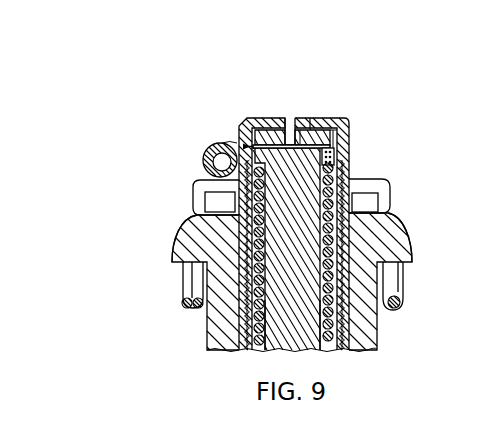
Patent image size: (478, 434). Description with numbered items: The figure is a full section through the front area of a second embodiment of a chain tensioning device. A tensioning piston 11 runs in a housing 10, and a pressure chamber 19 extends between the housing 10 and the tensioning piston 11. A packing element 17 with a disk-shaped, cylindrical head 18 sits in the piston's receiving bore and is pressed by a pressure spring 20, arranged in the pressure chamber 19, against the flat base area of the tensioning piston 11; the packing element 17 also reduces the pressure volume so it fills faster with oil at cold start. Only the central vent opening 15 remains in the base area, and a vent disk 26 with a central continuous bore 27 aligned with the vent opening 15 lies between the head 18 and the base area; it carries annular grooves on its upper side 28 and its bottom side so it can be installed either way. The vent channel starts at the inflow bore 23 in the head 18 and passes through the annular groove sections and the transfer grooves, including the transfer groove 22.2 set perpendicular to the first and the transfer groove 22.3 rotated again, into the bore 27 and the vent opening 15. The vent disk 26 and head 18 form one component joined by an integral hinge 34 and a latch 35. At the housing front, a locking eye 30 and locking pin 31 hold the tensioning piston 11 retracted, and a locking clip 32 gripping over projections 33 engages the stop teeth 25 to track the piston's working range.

The housing 10 is at (386, 318).
The tensioning piston 11 is at (352, 118).
The vent opening 15 is at (303, 130).
The packing element 17 is at (393, 284).
The head 18 is at (231, 138).
The pressure chamber 19 is at (240, 345).
The pressure spring 20 is at (352, 335).
The transfer groove 22.2 is at (290, 125).
The transfer groove 22.3 is at (322, 124).
The inflow bore 23 is at (352, 140).
The stop teeth 25 is at (240, 320).
The vent disk 26 is at (335, 130).
The central continuous bore 27 is at (308, 130).
The upper side 28 is at (272, 143).
The locking eye 30 is at (205, 142).
The locking pin 31 is at (226, 146).
The locking clip 32 is at (362, 186).
The projections 33 is at (182, 246).
The integral hinge 34 is at (246, 141).
The latch 35 is at (338, 160).